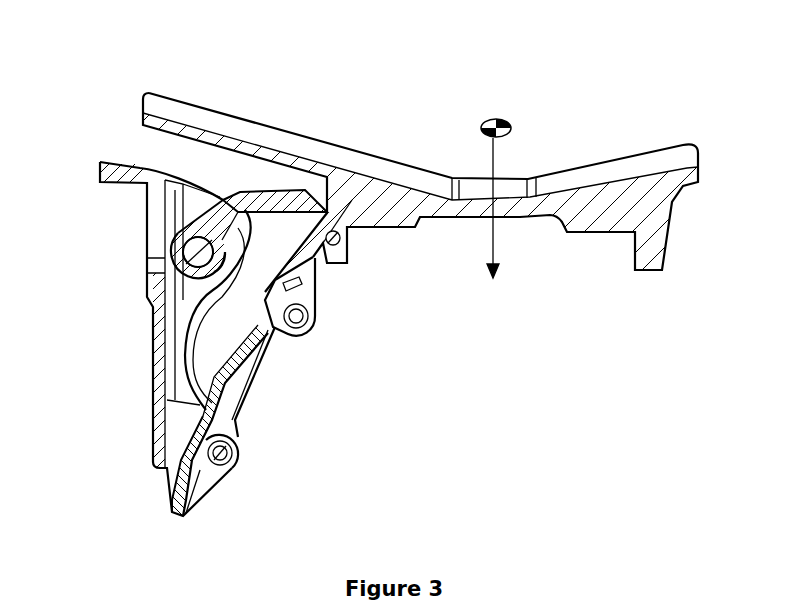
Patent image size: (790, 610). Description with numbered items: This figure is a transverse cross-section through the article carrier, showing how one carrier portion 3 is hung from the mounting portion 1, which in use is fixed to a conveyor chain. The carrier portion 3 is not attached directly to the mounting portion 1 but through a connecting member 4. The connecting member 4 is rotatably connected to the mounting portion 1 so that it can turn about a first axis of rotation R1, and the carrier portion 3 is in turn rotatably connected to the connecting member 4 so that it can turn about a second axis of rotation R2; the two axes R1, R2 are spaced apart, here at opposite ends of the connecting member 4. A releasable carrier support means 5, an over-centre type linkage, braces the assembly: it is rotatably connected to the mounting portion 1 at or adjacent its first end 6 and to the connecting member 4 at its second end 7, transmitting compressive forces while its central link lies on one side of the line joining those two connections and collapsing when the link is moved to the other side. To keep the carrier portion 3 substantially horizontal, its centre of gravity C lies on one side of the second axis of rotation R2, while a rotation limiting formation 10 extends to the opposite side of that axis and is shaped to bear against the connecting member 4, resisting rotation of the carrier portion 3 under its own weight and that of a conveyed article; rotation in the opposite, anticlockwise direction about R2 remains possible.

The mounting portion 1 is at (153, 353).
The carrier portion 3 is at (377, 156).
The connecting member 4 is at (237, 193).
The carrier support means 5 is at (262, 365).
The first end 6 is at (238, 452).
The second end 7 is at (327, 263).
The rotation limiting formation 10 is at (285, 210).
The first axis of rotation R1 is at (198, 252).
The second axis of rotation R2 is at (345, 243).
The centre of gravity C is at (497, 120).